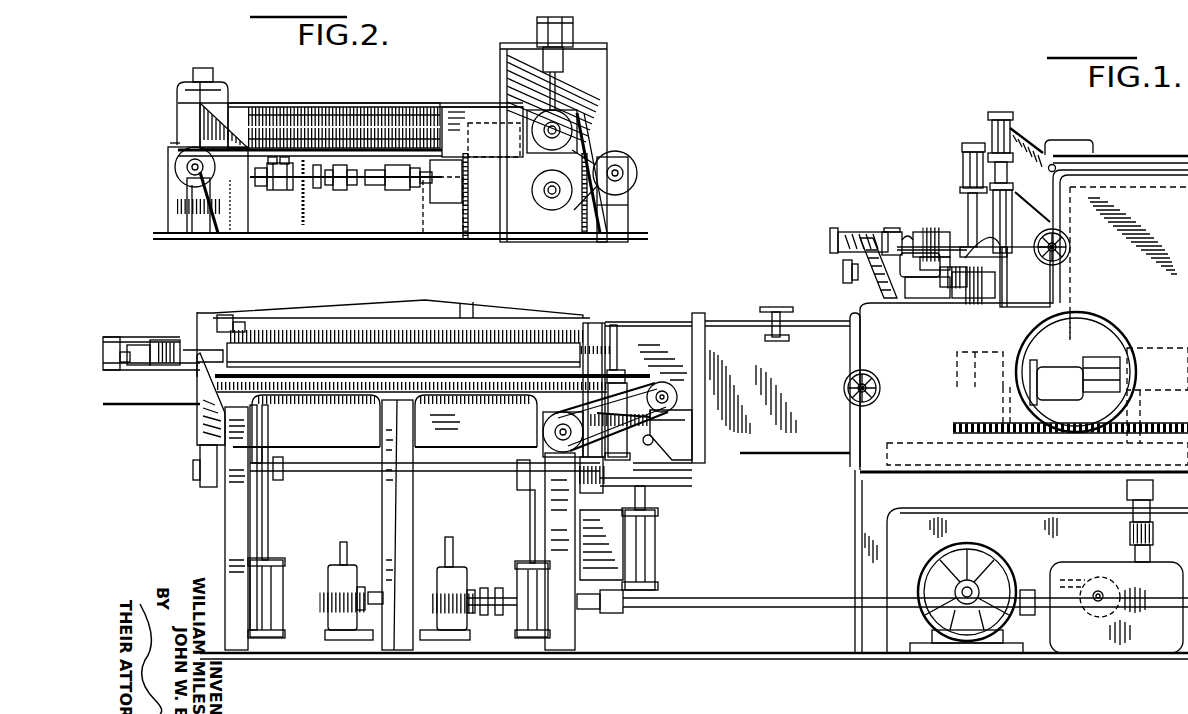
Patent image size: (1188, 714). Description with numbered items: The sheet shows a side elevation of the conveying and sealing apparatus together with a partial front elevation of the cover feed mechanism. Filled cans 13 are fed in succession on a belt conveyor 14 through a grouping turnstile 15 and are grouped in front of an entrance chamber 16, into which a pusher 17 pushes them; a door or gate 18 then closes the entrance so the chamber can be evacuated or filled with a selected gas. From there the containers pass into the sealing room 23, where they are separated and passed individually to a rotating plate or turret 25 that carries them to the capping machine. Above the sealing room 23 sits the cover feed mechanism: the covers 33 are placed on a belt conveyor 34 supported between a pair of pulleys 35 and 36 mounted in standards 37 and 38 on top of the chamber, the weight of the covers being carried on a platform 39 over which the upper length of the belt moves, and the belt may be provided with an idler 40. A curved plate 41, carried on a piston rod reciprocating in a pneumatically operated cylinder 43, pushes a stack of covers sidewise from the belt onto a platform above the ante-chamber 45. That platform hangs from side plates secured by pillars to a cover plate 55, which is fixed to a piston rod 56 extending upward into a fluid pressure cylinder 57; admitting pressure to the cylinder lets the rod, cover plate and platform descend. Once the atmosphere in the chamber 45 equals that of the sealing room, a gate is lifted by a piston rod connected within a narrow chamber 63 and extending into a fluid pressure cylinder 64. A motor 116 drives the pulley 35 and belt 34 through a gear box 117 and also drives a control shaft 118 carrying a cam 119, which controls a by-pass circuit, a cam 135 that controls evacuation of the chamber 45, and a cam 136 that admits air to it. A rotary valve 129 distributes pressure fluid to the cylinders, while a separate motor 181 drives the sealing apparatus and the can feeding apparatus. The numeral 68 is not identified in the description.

In FIG. 1, the cans 13 is at (118, 338).
In FIG. 1, the belt conveyor 14 is at (292, 380).
In FIG. 1, the grouping turnstile 15 is at (117, 375).
In FIG. 1, the entrance chamber 16 is at (393, 308).
In FIG. 1, the pusher 17 is at (520, 363).
In FIG. 1, the door or gate 18 is at (257, 330).
In FIG. 2, the sealing room 23 is at (330, 235).
In FIG. 1, the sealing room 23 is at (880, 345).
In FIG. 1, the rotating plate or turret 25 is at (970, 370).
In FIG. 2, the covers 33 is at (367, 110).
In FIG. 2, the belt conveyor 34 is at (180, 142).
In FIG. 1, the belt conveyor 34 is at (922, 295).
In FIG. 2, the pulley 35 is at (180, 166).
In FIG. 2, the pulley 36 is at (637, 170).
In FIG. 1, the pulley 36 is at (935, 298).
In FIG. 2, the standard 37 is at (187, 207).
In FIG. 2, the standard 38 is at (628, 221).
In FIG. 1, the standard 38 is at (902, 290).
In FIG. 2, the platform 39 is at (537, 160).
In FIG. 2, the idler 40 is at (565, 213).
In FIG. 2, the plate 41 is at (577, 118).
In FIG. 1, the plate 41 is at (905, 230).
In FIG. 2, the pneumatically operated cylinder 43 is at (545, 118).
In FIG. 1, the pneumatically operated cylinder 43 is at (840, 235).
In FIG. 1, the chamber 45 is at (990, 285).
In FIG. 1, the cover plate 55 is at (990, 262).
In FIG. 2, the piston rod 56 is at (560, 82).
In FIG. 1, the piston rod 56 is at (970, 215).
In FIG. 2, the fluid pressure cylinder 57 is at (573, 30).
In FIG. 1, the fluid pressure cylinder 57 is at (963, 168).
In FIG. 1, the narrow chamber 63 is at (1012, 222).
In FIG. 1, the fluid pressure cylinder 64 is at (1013, 126).
In FIG. 2, the belt 68 is at (540, 195).
In FIG. 1, the belt 68 is at (852, 288).
In FIG. 2, the motor 116 is at (185, 105).
In FIG. 2, the gear box 117 is at (170, 187).
In FIG. 2, the control shaft 118 is at (295, 185).
In FIG. 2, the cam 119 is at (303, 215).
In FIG. 2, the rotary valve 129 is at (470, 170).
In FIG. 2, the cam 135 is at (388, 195).
In FIG. 2, the cam 136 is at (345, 192).
In FIG. 1, the motor 181 is at (997, 560).